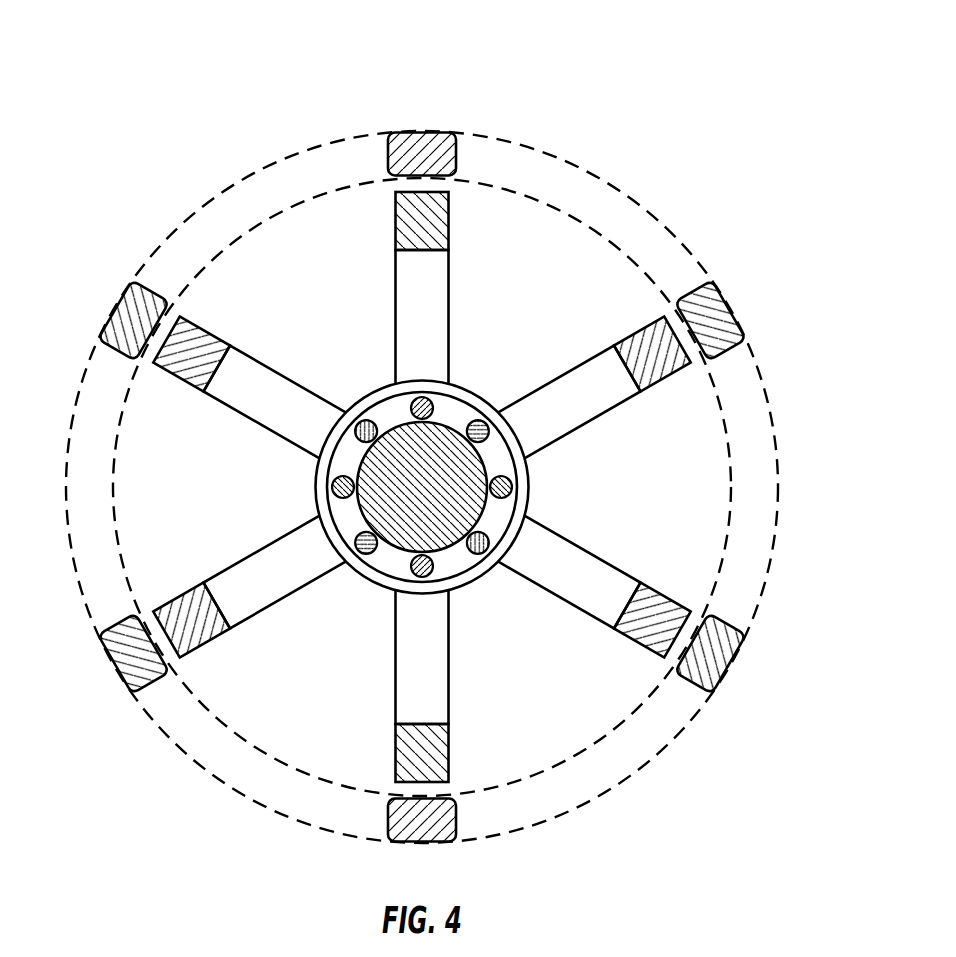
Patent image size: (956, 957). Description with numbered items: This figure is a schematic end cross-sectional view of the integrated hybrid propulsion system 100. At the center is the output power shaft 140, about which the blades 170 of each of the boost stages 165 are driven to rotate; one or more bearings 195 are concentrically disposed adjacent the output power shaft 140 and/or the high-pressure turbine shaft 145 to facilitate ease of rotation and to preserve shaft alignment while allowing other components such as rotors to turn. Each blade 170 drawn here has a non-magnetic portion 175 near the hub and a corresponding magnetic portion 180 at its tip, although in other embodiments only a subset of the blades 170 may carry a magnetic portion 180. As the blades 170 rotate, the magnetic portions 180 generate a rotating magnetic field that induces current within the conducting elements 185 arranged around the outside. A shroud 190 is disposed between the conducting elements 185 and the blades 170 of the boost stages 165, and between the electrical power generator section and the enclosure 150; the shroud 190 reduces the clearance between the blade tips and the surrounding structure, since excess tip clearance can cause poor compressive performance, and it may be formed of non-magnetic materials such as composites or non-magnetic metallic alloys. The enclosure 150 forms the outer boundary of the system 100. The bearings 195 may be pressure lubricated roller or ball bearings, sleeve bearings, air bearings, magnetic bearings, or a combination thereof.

The integrated hybrid propulsion system 100 is at (158, 80).
The output power shaft 140 is at (448, 547).
The high-pressure turbine shaft 145 is at (372, 398).
The enclosure 150 is at (232, 785).
The boost stages 165 is at (668, 438).
The blades 170 is at (314, 510).
The non-magnetic portion 175 is at (430, 470).
The magnetic portion 180 is at (643, 330).
The conducting elements 185 is at (428, 132).
The shroud 190 is at (248, 228).
The bearings 195 is at (503, 465).